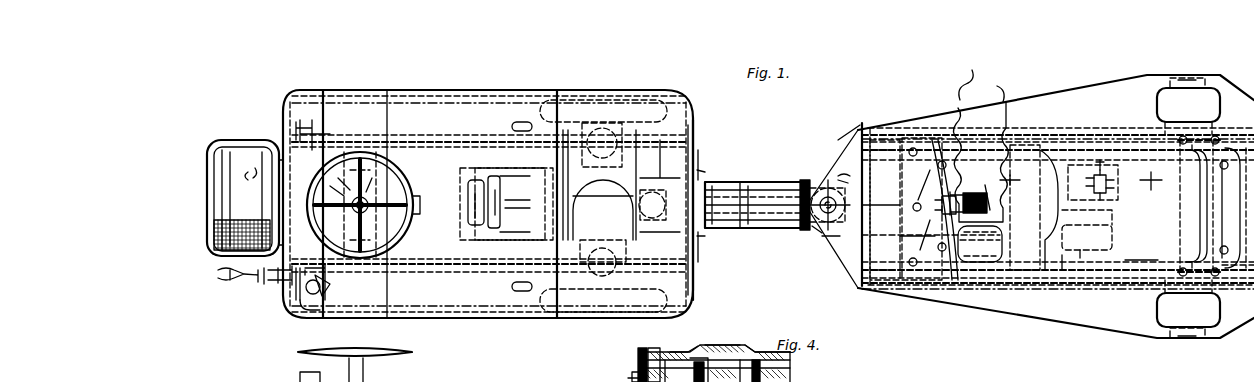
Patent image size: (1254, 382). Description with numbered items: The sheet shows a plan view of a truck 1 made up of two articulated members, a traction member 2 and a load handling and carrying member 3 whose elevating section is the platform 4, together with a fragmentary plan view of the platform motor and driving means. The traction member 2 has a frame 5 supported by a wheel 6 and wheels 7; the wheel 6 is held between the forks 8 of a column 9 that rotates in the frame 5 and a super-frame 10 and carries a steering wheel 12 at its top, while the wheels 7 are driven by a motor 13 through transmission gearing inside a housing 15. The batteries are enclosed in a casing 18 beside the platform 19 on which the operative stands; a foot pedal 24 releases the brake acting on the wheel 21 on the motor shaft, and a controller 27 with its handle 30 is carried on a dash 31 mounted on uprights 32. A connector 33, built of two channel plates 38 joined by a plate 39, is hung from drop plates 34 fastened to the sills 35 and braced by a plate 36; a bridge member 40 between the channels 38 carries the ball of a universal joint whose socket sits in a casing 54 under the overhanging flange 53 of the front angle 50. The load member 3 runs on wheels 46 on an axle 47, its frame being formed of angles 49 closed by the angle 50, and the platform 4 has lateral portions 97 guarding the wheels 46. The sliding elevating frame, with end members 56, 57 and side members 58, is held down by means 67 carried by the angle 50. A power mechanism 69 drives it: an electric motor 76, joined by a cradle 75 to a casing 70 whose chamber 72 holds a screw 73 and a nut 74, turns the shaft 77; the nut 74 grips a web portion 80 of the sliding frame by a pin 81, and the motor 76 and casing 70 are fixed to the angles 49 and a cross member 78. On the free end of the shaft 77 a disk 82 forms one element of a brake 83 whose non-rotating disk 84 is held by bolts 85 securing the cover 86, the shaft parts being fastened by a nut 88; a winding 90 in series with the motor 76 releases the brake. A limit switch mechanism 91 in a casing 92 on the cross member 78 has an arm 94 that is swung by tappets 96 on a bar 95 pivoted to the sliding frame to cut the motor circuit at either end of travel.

In FIG. 1, the truck 1 is at (840, 126).
In FIG. 1, the traction member 2 is at (548, 91).
In FIG. 1, the load handling and carrying member 3 is at (1048, 95).
In FIG. 1, the platform 4 is at (1096, 322).
In FIG. 1, the frame 5 is at (790, 205).
In FIG. 1, the wheel 6 is at (418, 196).
In FIG. 1, the wheels 7 is at (540, 113).
In FIG. 1, the forks 8 is at (350, 204).
In FIG. 1, the column 9 is at (368, 176).
In FIG. 1, the super-frame 10 is at (385, 91).
In FIG. 1, the steering wheel 12 is at (398, 238).
In FIG. 4, the steering wheel 12 is at (408, 356).
In FIG. 1, the motor 13 is at (520, 236).
In FIG. 1, the housing 15 is at (620, 186).
In FIG. 1, the casing 18 is at (527, 320).
In FIG. 1, the platform 19 is at (218, 200).
In FIG. 1, the wheel 21 is at (462, 182).
In FIG. 1, the foot pedal 24 is at (210, 238).
In FIG. 1, the controller 27 is at (246, 177).
In FIG. 1, the handle 30 is at (236, 284).
In FIG. 1, the dash 31 is at (332, 300).
In FIG. 1, the uprights 32 is at (322, 134).
In FIG. 1, the connector 33 is at (759, 182).
In FIG. 1, the drop plates 34 is at (672, 240).
In FIG. 1, the sills 35 is at (695, 140).
In FIG. 1, the plate 36 is at (700, 170).
In FIG. 1, the plates 38 is at (757, 238).
In FIG. 1, the plate 39 is at (720, 240).
In FIG. 1, the bridge member 40 is at (822, 182).
In FIG. 1, the wheels 46 is at (1153, 110).
In FIG. 1, the axle 47 is at (1176, 236).
In FIG. 1, the angles 49 is at (1080, 130).
In FIG. 1, the angle 50 is at (852, 256).
In FIG. 1, the overhanging flange 53 is at (800, 236).
In FIG. 1, the casing 54 is at (844, 172).
In FIG. 1, the end member 56 is at (928, 182).
In FIG. 1, the end member 57 is at (1186, 220).
In FIG. 1, the side members 58 is at (1140, 178).
In FIG. 1, the means for maintaining the frame in sliding engagement 67 is at (893, 190).
In FIG. 4, the power mechanism 69 is at (756, 358).
In FIG. 1, the casing 70 is at (1046, 236).
In FIG. 1, the chamber 72 is at (975, 190).
In FIG. 1, the screw or worm 73 is at (995, 186).
In FIG. 1, the nut 74 is at (1011, 175).
In FIG. 1, the cradle 75 is at (985, 244).
In FIG. 1, the electric motor 76 is at (1002, 290).
In FIG. 4, the shaft 77 is at (750, 348).
In FIG. 1, the cross member 78 is at (1066, 250).
In FIG. 1, the web portion 80 is at (935, 204).
In FIG. 1, the pin 81 is at (910, 222).
In FIG. 4, the disk 82 is at (673, 350).
In FIG. 4, the brake 83 is at (660, 352).
In FIG. 4, the disk 84 is at (770, 366).
In FIG. 4, the bolts 85 is at (636, 349).
In FIG. 4, the cover 86 is at (708, 345).
In FIG. 4, the nut 88 is at (706, 355).
In FIG. 4, the winding 90 is at (634, 378).
In FIG. 1, the limit switch mechanism 91 is at (1150, 216).
In FIG. 1, the casing 92 is at (1084, 248).
In FIG. 1, the arm 94 is at (1106, 166).
In FIG. 1, the bar 95 is at (1080, 180).
In FIG. 1, the tappets 96 is at (1096, 189).
In FIG. 1, the lateral portions 97 is at (1147, 74).
In FIG. 4, the gap a is at (618, 375).